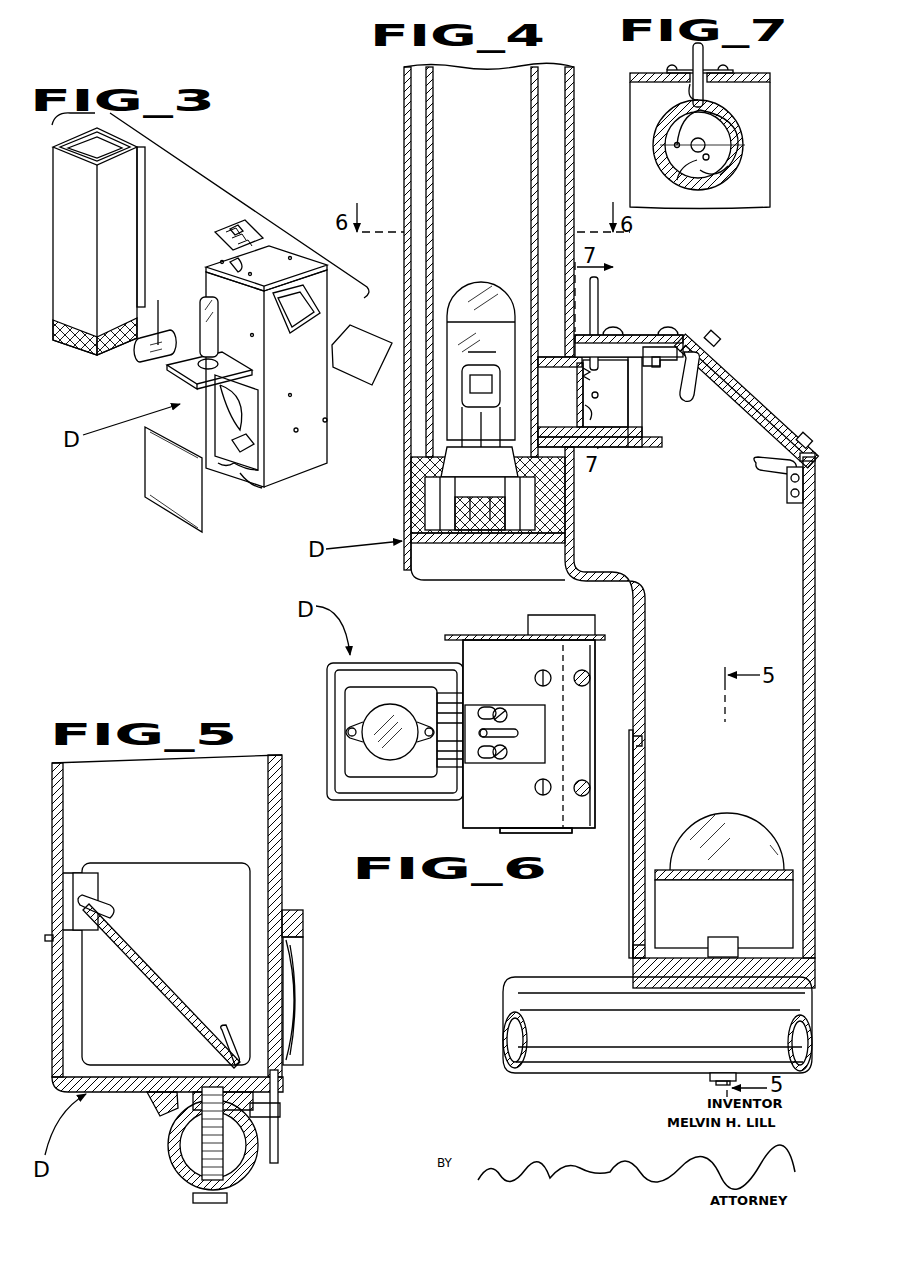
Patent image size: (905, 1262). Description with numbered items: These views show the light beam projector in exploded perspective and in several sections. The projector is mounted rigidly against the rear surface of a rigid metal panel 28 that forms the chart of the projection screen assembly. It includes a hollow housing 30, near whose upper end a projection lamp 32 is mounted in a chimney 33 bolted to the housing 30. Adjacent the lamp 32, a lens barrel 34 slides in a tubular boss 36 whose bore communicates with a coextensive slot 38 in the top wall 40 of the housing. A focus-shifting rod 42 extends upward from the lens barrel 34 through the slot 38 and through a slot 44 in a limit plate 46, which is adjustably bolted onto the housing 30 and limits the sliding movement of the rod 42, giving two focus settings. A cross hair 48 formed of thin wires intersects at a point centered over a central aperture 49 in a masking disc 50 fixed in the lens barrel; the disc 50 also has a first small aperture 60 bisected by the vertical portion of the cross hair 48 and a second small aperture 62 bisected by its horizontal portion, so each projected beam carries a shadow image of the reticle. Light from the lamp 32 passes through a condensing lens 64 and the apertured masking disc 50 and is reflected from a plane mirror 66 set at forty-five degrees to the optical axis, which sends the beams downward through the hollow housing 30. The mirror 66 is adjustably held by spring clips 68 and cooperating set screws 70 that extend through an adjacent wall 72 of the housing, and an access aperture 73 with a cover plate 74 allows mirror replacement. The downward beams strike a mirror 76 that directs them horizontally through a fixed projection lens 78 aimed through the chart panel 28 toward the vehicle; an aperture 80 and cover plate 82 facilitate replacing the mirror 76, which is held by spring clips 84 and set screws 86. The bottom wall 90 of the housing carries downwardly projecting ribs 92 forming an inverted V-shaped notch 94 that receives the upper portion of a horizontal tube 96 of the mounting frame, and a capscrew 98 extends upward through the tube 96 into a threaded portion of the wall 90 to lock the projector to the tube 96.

In FIG. 6, the rigid metal panel 28 is at (474, 636).
In FIG. 5, the rigid metal panel 28 is at (284, 831).
In FIG. 4, the hollow housing 30 is at (727, 561).
In FIG. 6, the hollow housing 30 is at (511, 817).
In FIG. 5, the hollow housing 30 is at (178, 804).
In FIG. 3, the hollow housing 30 is at (322, 404).
In FIG. 4, the projection lamp 32 is at (484, 286).
In FIG. 6, the projection lamp 32 is at (390, 760).
In FIG. 3, the projection lamp 32 is at (200, 300).
In FIG. 4, the chimney 33 is at (497, 154).
In FIG. 6, the chimney 33 is at (330, 688).
In FIG. 3, the chimney 33 is at (127, 175).
In FIG. 4, the lens barrel 34 is at (630, 433).
In FIG. 6, the lens barrel 34 is at (452, 708).
In FIG. 3, the lens barrel 34 is at (165, 375).
In FIG. 7, the lens barrel 34 is at (745, 145).
In FIG. 4, the tubular boss 36 is at (628, 452).
In FIG. 4, the slot 38 is at (632, 346).
In FIG. 3, the slot 38 is at (246, 264).
In FIG. 7, the slot 38 is at (688, 90).
In FIG. 4, the top wall 40 is at (675, 335).
In FIG. 6, the top wall 40 is at (512, 667).
In FIG. 3, the top wall 40 is at (204, 262).
In FIG. 7, the top wall 40 is at (772, 77).
In FIG. 4, the focus-shifting rod 42 is at (600, 281).
In FIG. 6, the focus-shifting rod 42 is at (483, 740).
In FIG. 3, the focus-shifting rod 42 is at (170, 311).
In FIG. 7, the focus-shifting rod 42 is at (693, 53).
In FIG. 4, the slot 44 is at (620, 333).
In FIG. 6, the slot 44 is at (520, 733).
In FIG. 3, the slot 44 is at (238, 224).
In FIG. 4, the limit plate 46 is at (674, 333).
In FIG. 6, the limit plate 46 is at (536, 757).
In FIG. 3, the limit plate 46 is at (222, 224).
In FIG. 7, the limit plate 46 is at (667, 70).
In FIG. 7, the cross hair 48 is at (720, 175).
In FIG. 4, the central aperture 49 is at (584, 399).
In FIG. 7, the central aperture 49 is at (706, 145).
In FIG. 4, the masking disc 50 is at (584, 386).
In FIG. 7, the masking disc 50 is at (680, 172).
In FIG. 4, the first small aperture 60 is at (584, 415).
In FIG. 7, the first small aperture 60 is at (702, 127).
In FIG. 7, the second small aperture 62 is at (677, 142).
In FIG. 4, the condensing lens 64 is at (540, 380).
In FIG. 3, the condensing lens 64 is at (138, 355).
In FIG. 4, the plane mirror 66 is at (720, 373).
In FIG. 4, the spring clips 68 is at (690, 402).
In FIG. 4, the set screws 70 is at (720, 340).
In FIG. 6, the set screws 70 is at (590, 678).
In FIG. 4, the wall 72 is at (716, 360).
In FIG. 6, the wall 72 is at (590, 815).
In FIG. 3, the wall 72 is at (304, 290).
In FIG. 3, the access aperture 73 is at (318, 302).
In FIG. 6, the cover plate 74 is at (572, 836).
In FIG. 3, the cover plate 74 is at (373, 367).
In FIG. 4, the mirror 76 is at (740, 917).
In FIG. 5, the mirror 76 is at (165, 990).
In FIG. 4, the fixed projection lens 78 is at (742, 859).
In FIG. 5, the fixed projection lens 78 is at (300, 965).
In FIG. 4, the aperture 80 is at (644, 745).
In FIG. 5, the aperture 80 is at (189, 871).
In FIG. 3, the aperture 80 is at (264, 484).
In FIG. 4, the cover plate 82 is at (635, 761).
In FIG. 5, the cover plate 82 is at (205, 922).
In FIG. 3, the cover plate 82 is at (185, 487).
In FIG. 5, the spring clips 84 is at (108, 908).
In FIG. 5, the set screws 86 is at (56, 938).
In FIG. 3, the set screws 86 is at (327, 422).
In FIG. 4, the bottom wall 90 is at (636, 962).
In FIG. 5, the bottom wall 90 is at (115, 1086).
In FIG. 4, the ribs 92 is at (637, 978).
In FIG. 5, the ribs 92 is at (178, 1112).
In FIG. 5, the V-shaped notch 94 is at (200, 1130).
In FIG. 4, the horizontal tube 96 is at (672, 1041).
In FIG. 5, the horizontal tube 96 is at (170, 1156).
In FIG. 4, the capscrew 98 is at (710, 1078).
In FIG. 5, the capscrew 98 is at (193, 1197).